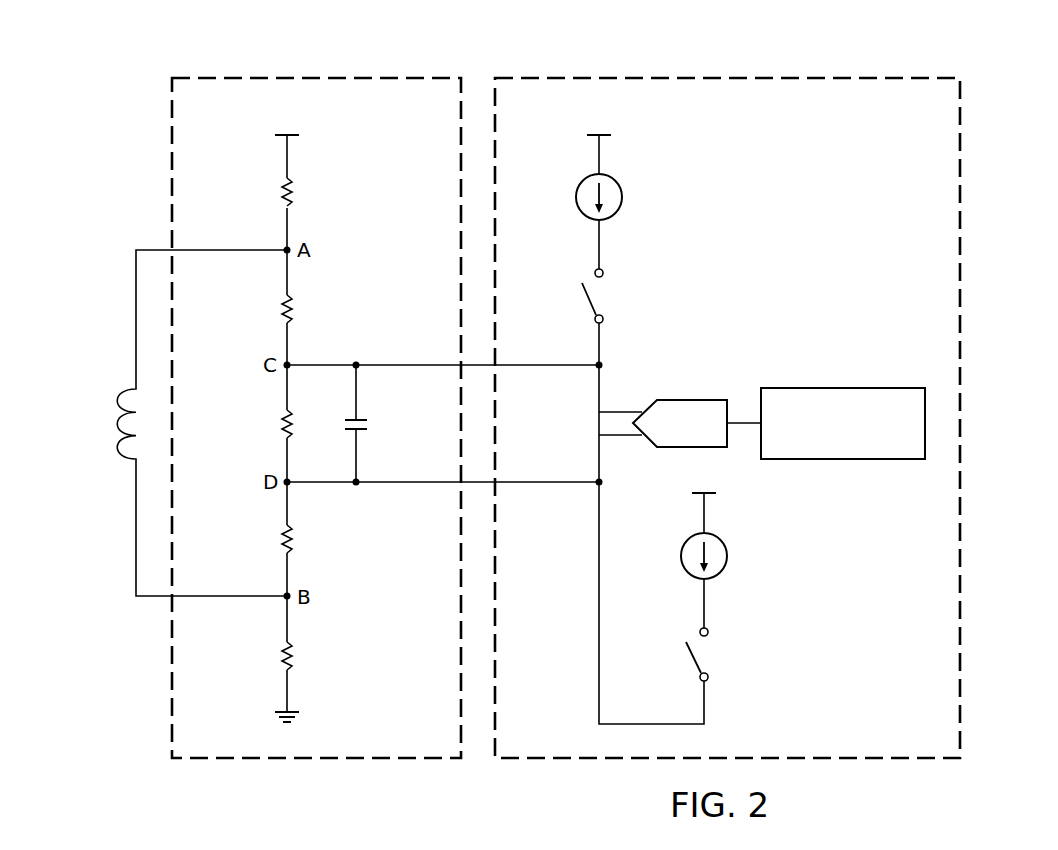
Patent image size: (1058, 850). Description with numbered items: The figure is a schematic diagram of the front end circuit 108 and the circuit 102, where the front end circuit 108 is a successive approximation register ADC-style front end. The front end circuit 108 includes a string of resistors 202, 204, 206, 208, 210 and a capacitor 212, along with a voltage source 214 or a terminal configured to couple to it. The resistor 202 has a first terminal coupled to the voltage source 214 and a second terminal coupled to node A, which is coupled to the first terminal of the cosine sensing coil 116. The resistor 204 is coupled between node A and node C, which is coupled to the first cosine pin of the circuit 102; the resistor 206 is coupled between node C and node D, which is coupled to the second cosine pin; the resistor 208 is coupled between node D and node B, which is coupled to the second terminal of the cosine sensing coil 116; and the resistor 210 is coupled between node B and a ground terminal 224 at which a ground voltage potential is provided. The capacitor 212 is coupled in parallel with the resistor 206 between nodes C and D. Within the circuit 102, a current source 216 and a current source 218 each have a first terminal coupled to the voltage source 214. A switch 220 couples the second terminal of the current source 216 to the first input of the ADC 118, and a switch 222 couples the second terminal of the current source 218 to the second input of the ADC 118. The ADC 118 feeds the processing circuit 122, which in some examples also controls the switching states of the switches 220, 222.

The circuit 102 is at (812, 72).
The front end circuit 108 is at (230, 72).
The cosine sensing coil 116 is at (120, 413).
The ADC 118 is at (689, 400).
The processing circuit 122 is at (843, 388).
The resistor 202 is at (282, 185).
The resistor 204 is at (282, 300).
The resistor 206 is at (282, 415).
The resistor 208 is at (282, 543).
The resistor 210 is at (282, 659).
The capacitor 212 is at (368, 423).
The voltage source 214 is at (282, 141).
The current source 216 is at (622, 197).
The current source 218 is at (728, 558).
The switch 220 is at (586, 296).
The switch 222 is at (687, 653).
The ground terminal 224 is at (280, 716).